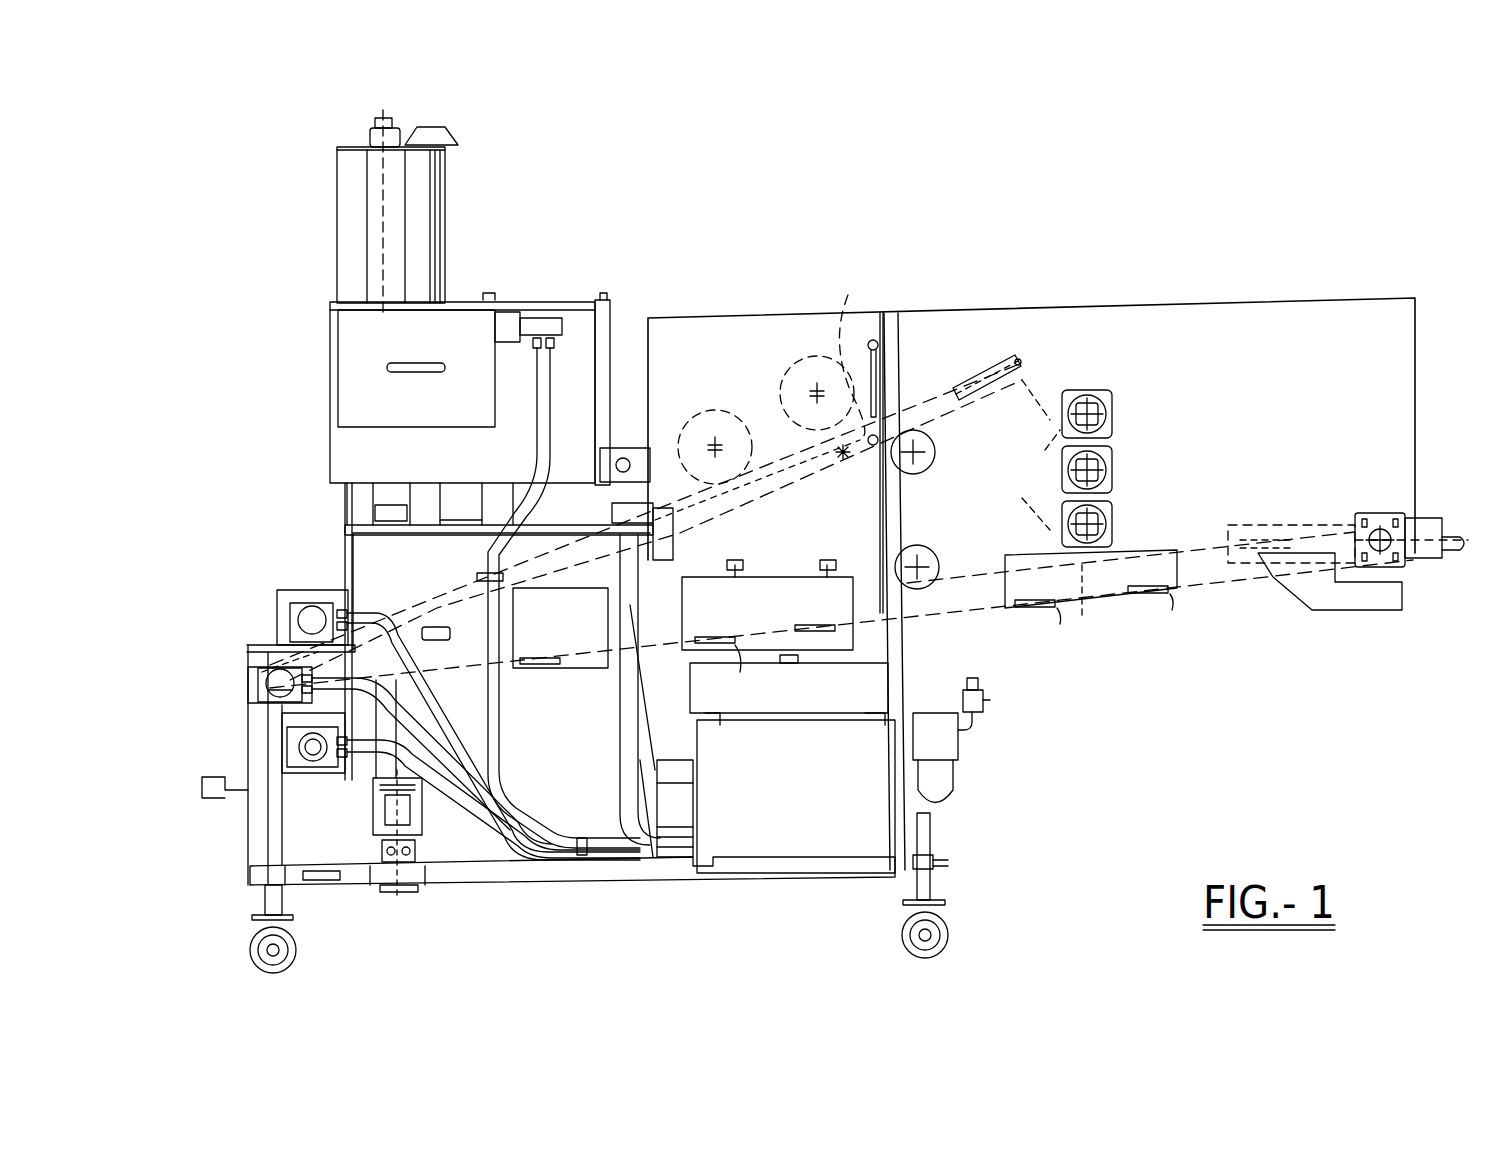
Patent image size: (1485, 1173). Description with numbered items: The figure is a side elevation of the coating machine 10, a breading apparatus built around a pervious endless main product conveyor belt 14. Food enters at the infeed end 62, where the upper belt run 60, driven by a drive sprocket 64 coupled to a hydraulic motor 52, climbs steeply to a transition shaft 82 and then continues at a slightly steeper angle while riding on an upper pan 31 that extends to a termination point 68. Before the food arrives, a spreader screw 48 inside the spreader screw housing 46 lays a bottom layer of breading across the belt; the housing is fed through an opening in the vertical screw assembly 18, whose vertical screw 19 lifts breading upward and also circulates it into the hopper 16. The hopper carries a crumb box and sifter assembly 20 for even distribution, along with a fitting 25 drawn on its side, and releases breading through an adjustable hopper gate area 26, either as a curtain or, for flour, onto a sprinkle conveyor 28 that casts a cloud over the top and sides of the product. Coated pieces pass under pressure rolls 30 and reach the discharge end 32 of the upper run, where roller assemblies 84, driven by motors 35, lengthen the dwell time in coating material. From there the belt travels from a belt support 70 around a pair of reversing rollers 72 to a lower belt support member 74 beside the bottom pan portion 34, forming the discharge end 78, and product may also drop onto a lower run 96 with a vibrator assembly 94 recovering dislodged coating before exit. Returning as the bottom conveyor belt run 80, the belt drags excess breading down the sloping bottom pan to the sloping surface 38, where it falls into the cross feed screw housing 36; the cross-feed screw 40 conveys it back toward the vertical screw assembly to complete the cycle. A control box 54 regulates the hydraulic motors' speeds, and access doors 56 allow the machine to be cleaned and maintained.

The coating machine 10 is at (762, 295).
The main product conveyor belt 14 is at (437, 598).
The hopper 16 is at (587, 300).
The vertical screw assembly 18 is at (335, 233).
The vertical screw 19 is at (367, 255).
The crumb box and sifter assembly 20 is at (338, 384).
The fitting 25 is at (540, 318).
The hopper gate area 26 is at (640, 448).
The sprinkle conveyor 28 is at (509, 521).
The pressure rolls 30 is at (715, 410).
The upper pan 31 is at (768, 478).
The discharge end of upper belt run 32 is at (1012, 345).
The bottom pan portion 34 is at (1198, 585).
The motors 35 is at (1113, 400).
The cross feed screw housing 36 is at (282, 748).
The sloping surface 38 is at (400, 740).
The cross-feed screw 40 is at (313, 760).
The spreader screw housing 46 is at (278, 600).
The spreader screw 48 is at (310, 605).
The hydraulic motor 52 is at (250, 680).
The control box 54 is at (765, 858).
The access doors 56 is at (772, 577).
The upper belt run 60 is at (808, 457).
The infeed end 62 is at (250, 658).
The drive sprocket 64 is at (270, 690).
The termination point 68 is at (864, 444).
The belt support 70 is at (990, 367).
The reversing rollers 72 is at (948, 478).
The lower belt support member 74 is at (1330, 610).
The discharge end 78 is at (1455, 530).
The bottom conveyor belt run 80 is at (762, 645).
The transition shaft 82 is at (560, 628).
The roller assemblies 84 is at (1100, 378).
The vibrator assembly 94 is at (1405, 555).
The lower run 96 is at (1088, 603).